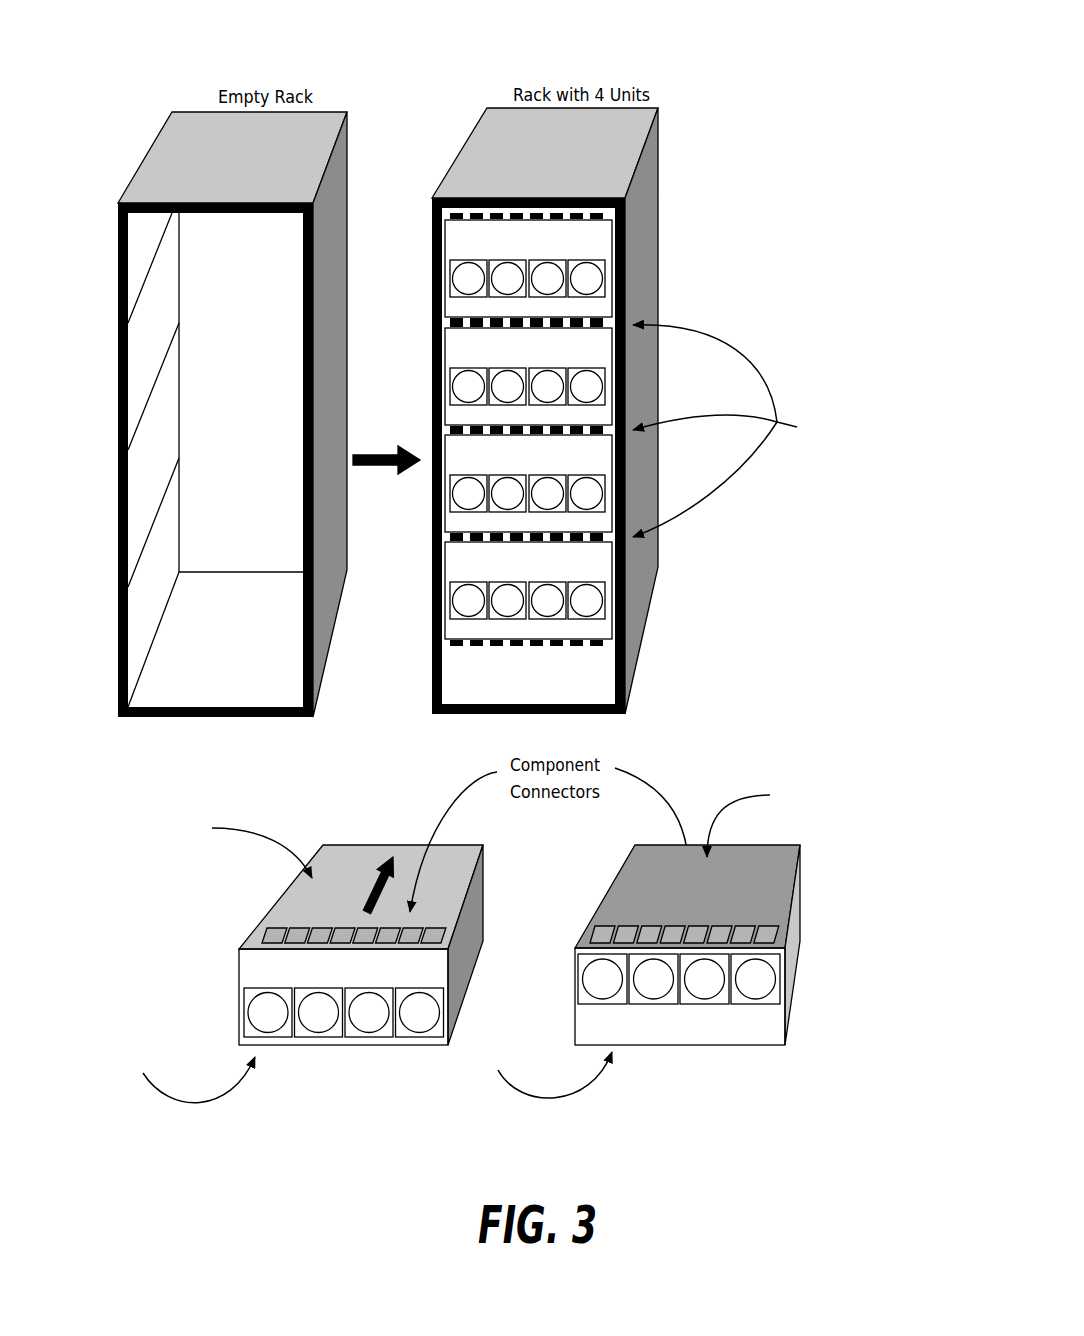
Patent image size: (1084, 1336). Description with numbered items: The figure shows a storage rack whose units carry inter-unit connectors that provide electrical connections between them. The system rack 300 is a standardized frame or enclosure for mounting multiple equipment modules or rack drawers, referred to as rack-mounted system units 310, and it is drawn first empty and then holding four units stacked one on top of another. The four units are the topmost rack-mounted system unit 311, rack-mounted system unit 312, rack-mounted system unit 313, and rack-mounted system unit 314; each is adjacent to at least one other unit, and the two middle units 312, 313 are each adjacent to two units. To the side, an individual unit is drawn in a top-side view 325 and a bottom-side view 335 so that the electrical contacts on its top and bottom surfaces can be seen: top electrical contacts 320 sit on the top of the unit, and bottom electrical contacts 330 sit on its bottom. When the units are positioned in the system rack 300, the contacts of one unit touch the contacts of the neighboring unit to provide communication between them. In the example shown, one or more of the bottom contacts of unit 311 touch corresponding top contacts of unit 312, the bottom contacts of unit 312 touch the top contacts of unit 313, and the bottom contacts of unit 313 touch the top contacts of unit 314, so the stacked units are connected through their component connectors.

The system rack 300 is at (328, 122).
The rack-mounted system units 310 is at (603, 566).
The topmost rack-mounted system unit 311 is at (457, 243).
The rack-mounted system unit 312 is at (457, 355).
The rack-mounted system unit 313 is at (457, 448).
The rack-mounted system unit 314 is at (457, 563).
The top electrical contacts 320 is at (434, 929).
The top-side view 325 is at (405, 1060).
The bottom electrical contacts 330 is at (769, 926).
The bottom-side view 335 is at (758, 1058).